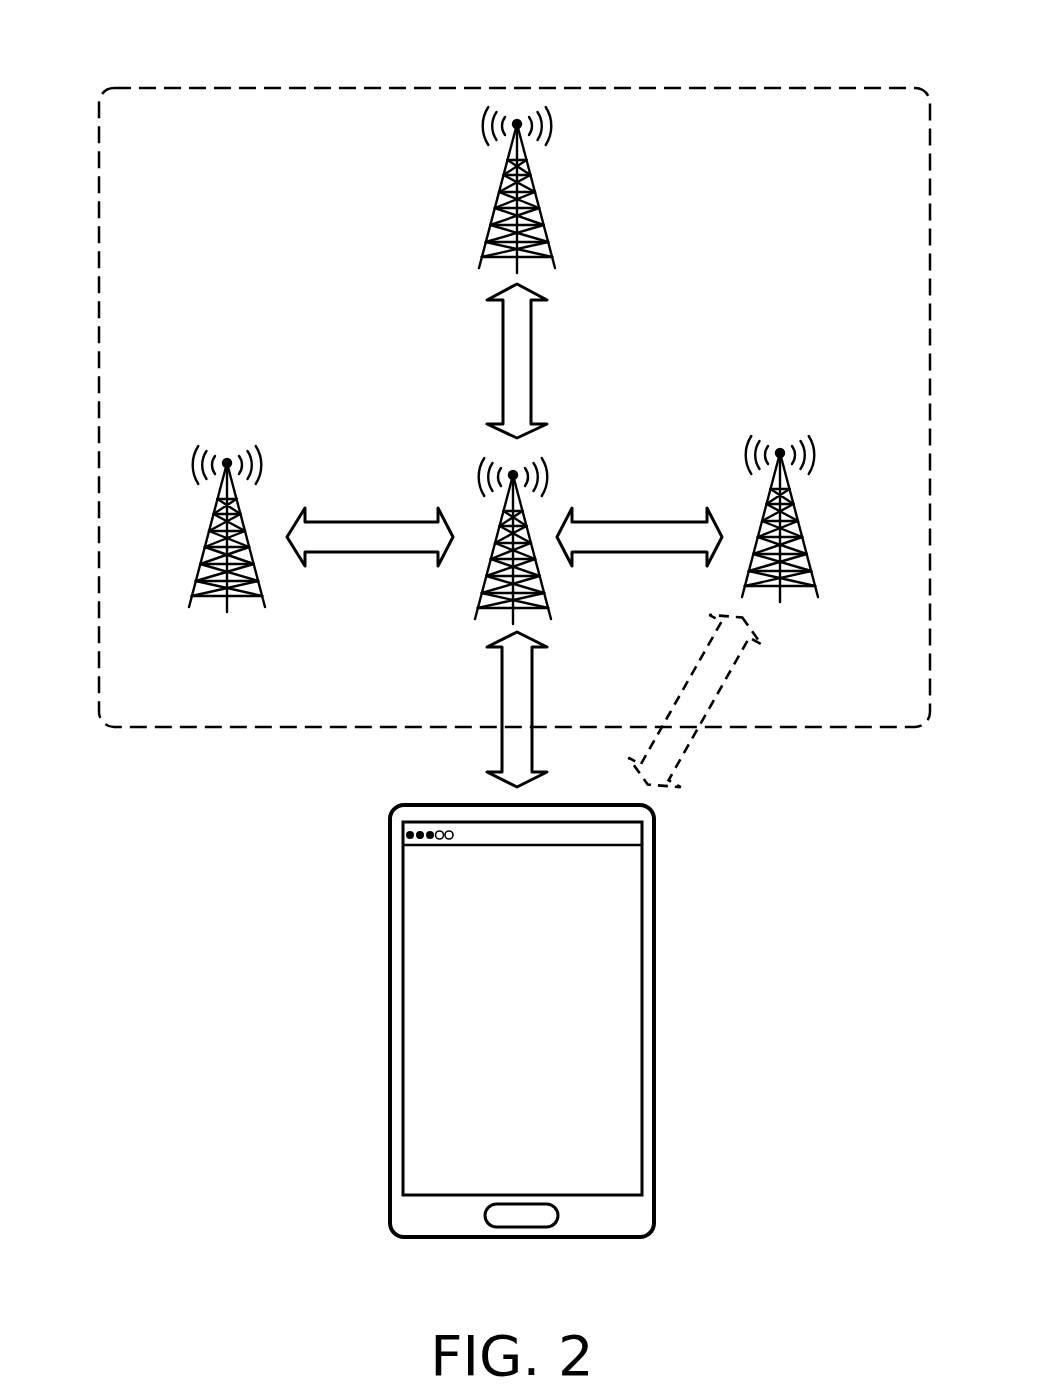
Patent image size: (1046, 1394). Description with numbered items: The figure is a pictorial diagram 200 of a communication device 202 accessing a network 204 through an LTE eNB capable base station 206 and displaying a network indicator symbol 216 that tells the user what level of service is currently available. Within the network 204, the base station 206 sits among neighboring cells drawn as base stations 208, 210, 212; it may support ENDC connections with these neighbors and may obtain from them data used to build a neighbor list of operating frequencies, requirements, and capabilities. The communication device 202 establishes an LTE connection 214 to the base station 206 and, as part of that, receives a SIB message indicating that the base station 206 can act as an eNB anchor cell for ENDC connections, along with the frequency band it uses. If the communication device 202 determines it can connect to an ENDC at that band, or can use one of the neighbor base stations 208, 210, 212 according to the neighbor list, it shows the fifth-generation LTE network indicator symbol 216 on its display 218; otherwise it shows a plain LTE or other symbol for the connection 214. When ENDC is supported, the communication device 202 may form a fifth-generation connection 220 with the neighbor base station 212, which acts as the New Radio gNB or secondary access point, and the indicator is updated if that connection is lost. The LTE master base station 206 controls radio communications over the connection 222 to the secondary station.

The pictorial diagram 200 is at (166, 54).
The communication device 202 is at (390, 1022).
The network 204 is at (307, 88).
The base station 206 is at (566, 460).
The neighbor base station 208 is at (223, 439).
The neighbor base station 210 is at (568, 196).
The neighbor base station 212 is at (775, 425).
The LTE connection 214 is at (500, 694).
The network indicator symbol 216 is at (470, 821).
The display 218 is at (522, 1008).
The 5G connection 220 is at (677, 702).
The connection 222 is at (660, 553).